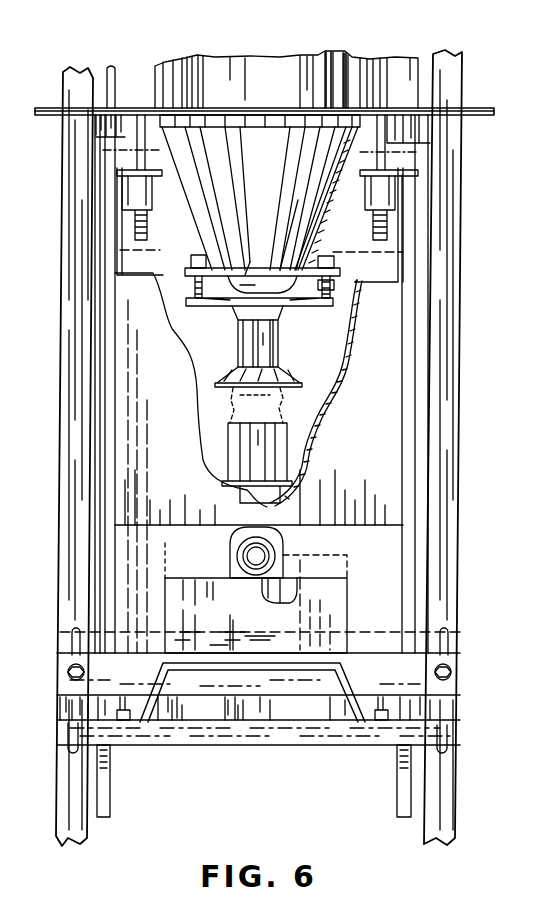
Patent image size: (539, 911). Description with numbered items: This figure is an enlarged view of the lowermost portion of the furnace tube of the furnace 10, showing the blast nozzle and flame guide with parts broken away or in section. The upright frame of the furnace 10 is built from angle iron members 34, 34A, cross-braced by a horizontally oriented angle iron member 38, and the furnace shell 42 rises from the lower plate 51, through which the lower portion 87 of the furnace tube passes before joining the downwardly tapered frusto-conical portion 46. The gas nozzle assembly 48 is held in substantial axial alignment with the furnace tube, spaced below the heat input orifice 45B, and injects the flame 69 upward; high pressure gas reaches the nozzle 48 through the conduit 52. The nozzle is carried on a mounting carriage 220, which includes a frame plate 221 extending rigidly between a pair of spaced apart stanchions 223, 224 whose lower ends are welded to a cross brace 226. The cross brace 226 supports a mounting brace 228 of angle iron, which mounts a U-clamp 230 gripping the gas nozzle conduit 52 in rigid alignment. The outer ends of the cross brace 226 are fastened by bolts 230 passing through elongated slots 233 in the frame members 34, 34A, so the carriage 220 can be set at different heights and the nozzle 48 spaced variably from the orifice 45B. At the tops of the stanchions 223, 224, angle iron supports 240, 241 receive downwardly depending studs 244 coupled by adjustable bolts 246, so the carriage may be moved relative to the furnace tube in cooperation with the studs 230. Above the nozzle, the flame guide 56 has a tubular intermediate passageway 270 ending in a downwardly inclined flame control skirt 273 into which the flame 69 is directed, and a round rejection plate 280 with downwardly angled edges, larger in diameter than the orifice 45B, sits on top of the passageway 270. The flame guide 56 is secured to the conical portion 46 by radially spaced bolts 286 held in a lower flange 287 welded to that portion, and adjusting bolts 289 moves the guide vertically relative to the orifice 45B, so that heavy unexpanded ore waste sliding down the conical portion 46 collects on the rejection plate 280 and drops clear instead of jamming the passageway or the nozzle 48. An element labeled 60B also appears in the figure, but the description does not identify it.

The furnace 10 is at (211, 40).
The angle iron member 34 is at (442, 798).
The angle iron member 34A is at (77, 557).
The horizontally oriented angle iron member 38 is at (420, 126).
The furnace shell 42 is at (390, 76).
The heat input orifice 45B is at (299, 200).
The frusto-conical portion 46 is at (317, 163).
The gas nozzle assembly 48 is at (310, 470).
The lower plate 51 is at (116, 73).
The gas nozzle conduit 52 is at (283, 568).
The flame guide 56 is at (292, 356).
The housing portion 60B is at (28, 455).
The flame 69 is at (230, 268).
The lower portion of furnace tube 87 is at (242, 123).
The mounting carriage 220 is at (360, 582).
The frame plate 221 is at (397, 411).
The stanchion 223 is at (100, 234).
The stanchion 224 is at (410, 232).
The cross brace 226 is at (315, 680).
The mounting brace 228 is at (323, 612).
The bolts 230 is at (230, 560).
The elongated slot 233 is at (72, 647).
The angle iron support 240 is at (122, 172).
The angle iron support 241 is at (393, 177).
The downwardly depending stud 244 is at (476, 255).
The adjustable bolt 246 is at (147, 190).
The tubular intermediate passageway 270 is at (251, 343).
The flame control skirt 273 is at (293, 381).
The rejection plate 280 is at (222, 291).
The bolts 286 is at (336, 292).
The lower flange 287 is at (214, 256).
The bolts 289 is at (336, 264).